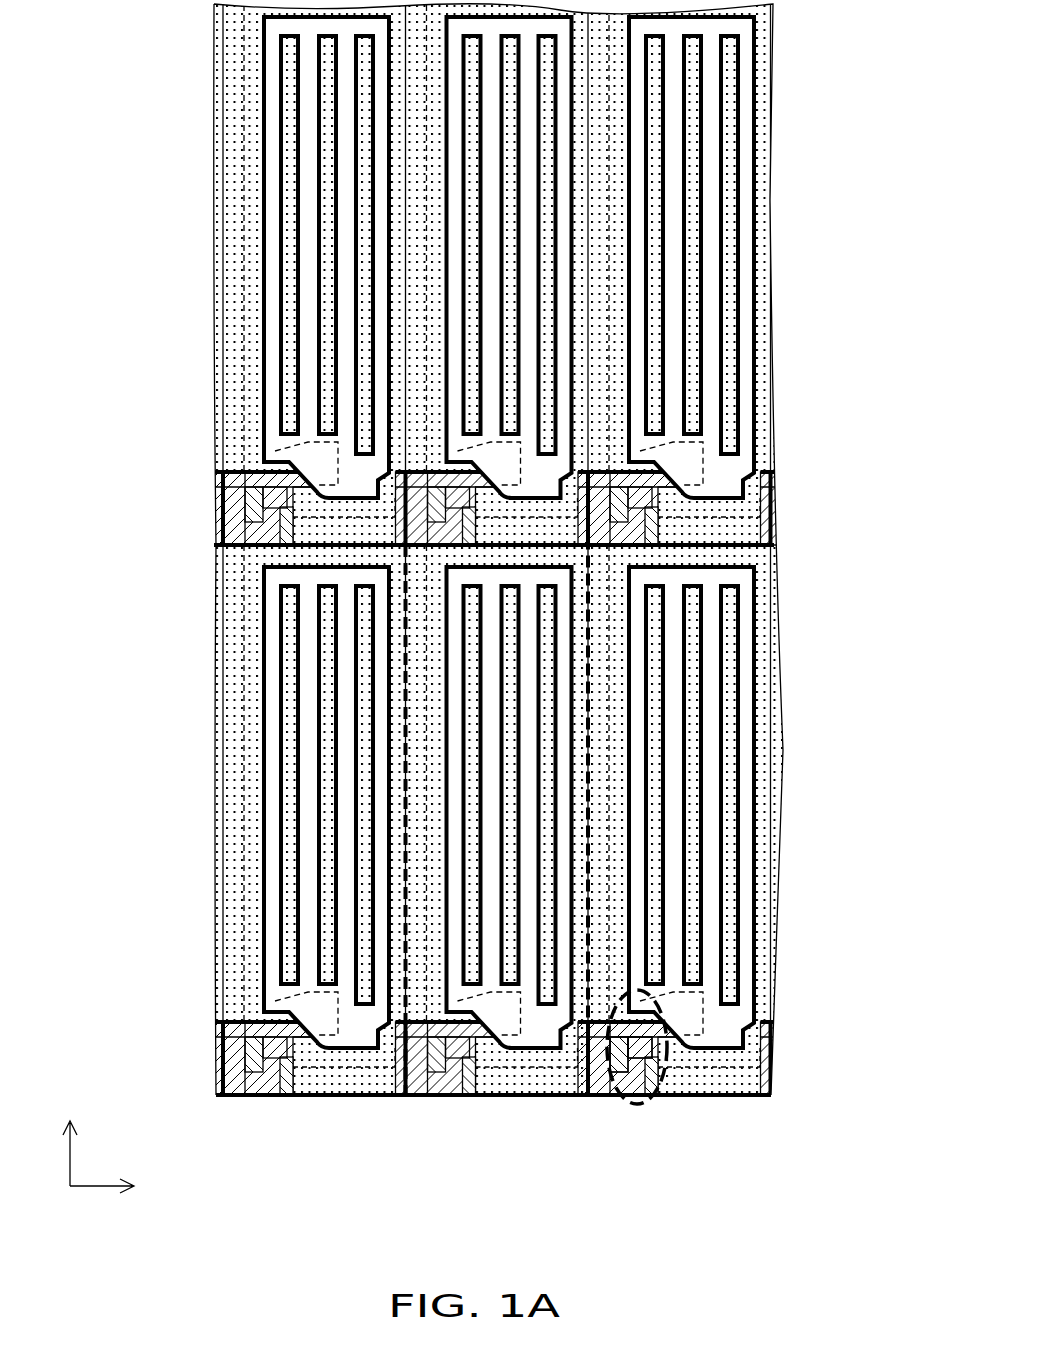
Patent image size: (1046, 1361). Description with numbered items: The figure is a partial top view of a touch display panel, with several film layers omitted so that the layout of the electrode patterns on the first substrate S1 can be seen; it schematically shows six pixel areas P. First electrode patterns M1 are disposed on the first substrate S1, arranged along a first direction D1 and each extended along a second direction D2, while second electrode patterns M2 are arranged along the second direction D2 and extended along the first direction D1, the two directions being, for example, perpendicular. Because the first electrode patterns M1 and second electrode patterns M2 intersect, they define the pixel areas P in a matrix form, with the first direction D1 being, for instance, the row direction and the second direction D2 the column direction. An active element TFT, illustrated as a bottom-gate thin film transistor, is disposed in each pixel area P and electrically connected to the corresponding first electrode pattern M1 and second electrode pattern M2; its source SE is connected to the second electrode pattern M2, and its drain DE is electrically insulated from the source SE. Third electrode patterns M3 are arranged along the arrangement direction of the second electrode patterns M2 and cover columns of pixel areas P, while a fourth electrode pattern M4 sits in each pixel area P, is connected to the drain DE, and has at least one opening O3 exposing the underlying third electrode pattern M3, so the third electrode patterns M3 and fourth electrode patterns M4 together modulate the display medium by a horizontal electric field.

The first substrate S1 is at (212, 855).
The first electrode pattern M1 is at (775, 1060).
The second electrode pattern M2 is at (597, 1087).
The third electrode pattern M3 is at (767, 562).
The fourth electrode pattern M4 is at (750, 747).
The opening O3 is at (735, 650).
The pixel area P is at (519, 1097).
The active element TFT is at (652, 1100).
The source SE is at (627, 1085).
The drain DE is at (640, 1047).
The first direction D1 is at (69, 1133).
The second direction D2 is at (121, 1184).